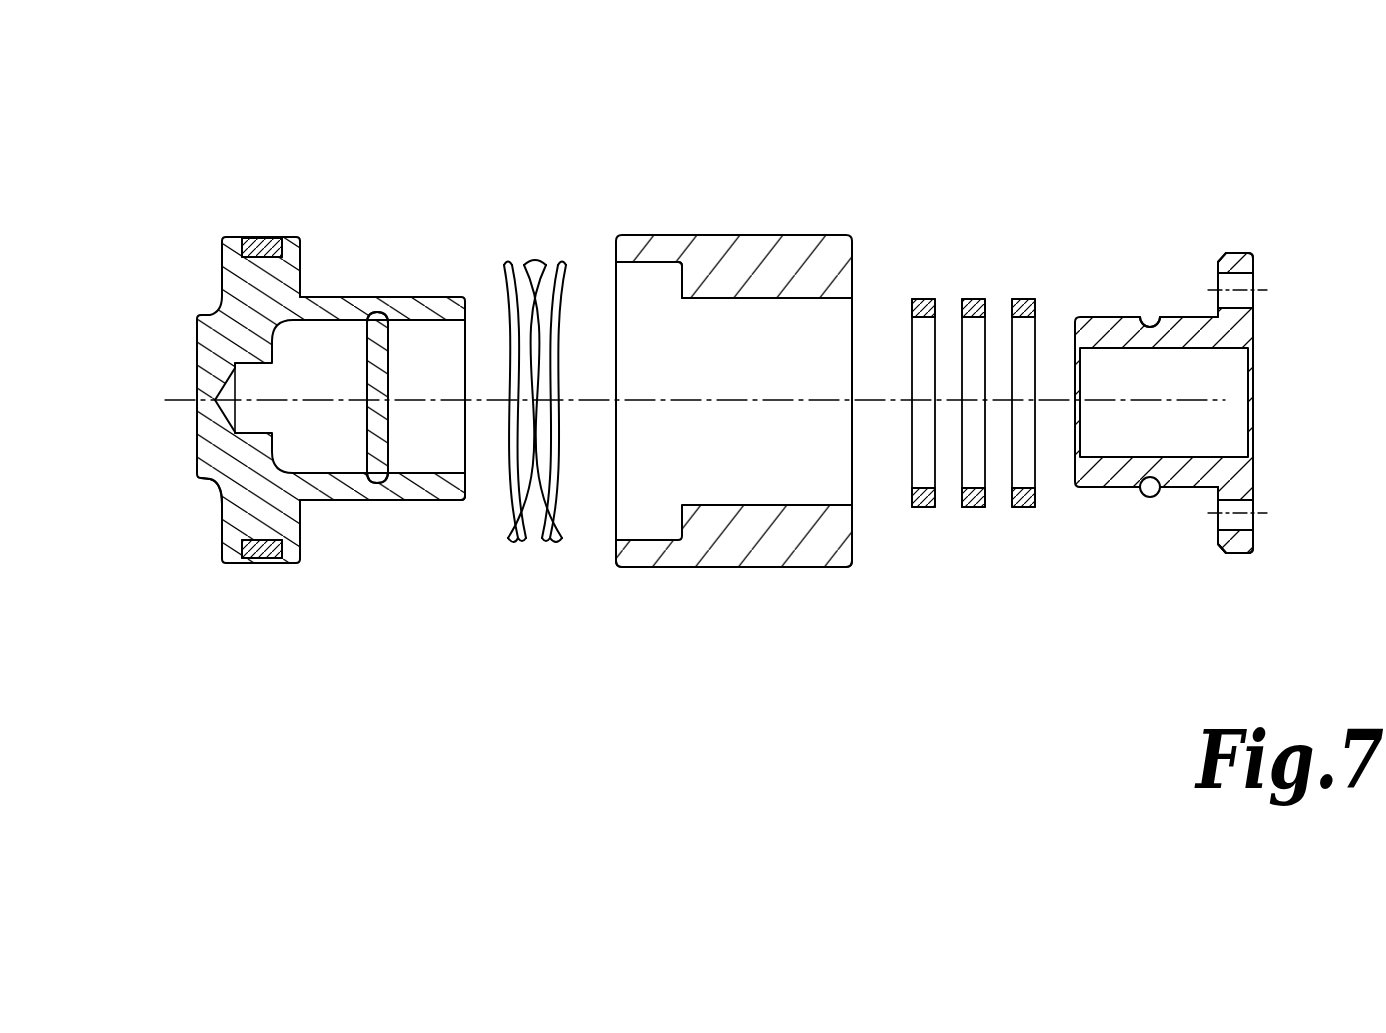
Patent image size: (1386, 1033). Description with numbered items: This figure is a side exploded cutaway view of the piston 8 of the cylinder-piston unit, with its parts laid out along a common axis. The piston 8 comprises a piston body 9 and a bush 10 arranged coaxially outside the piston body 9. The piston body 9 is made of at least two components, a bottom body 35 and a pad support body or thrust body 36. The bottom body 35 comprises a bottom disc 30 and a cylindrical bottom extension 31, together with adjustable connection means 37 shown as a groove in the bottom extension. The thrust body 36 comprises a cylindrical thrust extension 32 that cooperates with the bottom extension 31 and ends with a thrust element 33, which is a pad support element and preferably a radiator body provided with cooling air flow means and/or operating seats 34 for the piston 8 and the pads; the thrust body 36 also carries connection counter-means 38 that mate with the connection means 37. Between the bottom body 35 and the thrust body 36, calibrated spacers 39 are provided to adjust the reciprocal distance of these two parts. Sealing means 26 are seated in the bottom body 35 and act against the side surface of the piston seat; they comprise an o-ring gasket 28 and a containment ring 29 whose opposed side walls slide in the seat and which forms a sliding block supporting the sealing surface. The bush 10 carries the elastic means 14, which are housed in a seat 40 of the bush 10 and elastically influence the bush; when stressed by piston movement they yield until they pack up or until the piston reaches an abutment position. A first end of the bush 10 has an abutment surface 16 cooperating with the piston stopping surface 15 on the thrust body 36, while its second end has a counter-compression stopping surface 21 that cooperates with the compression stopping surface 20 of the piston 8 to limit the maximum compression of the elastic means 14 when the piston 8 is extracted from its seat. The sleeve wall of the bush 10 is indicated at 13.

The piston 8 is at (1158, 188).
The piston body 9 is at (233, 492).
The bush 10 is at (792, 253).
The sleeve body 13 is at (749, 566).
The elastic means 14 is at (550, 282).
The piston stopping surface 15 is at (1213, 523).
The abutment surface 16 is at (854, 542).
The compression stopping surface 20 is at (300, 530).
The counter-compression stopping surface 21 is at (616, 551).
The sealing means 26 is at (253, 571).
The o-ring gasket 28 is at (305, 260).
The containment ring 29 is at (250, 237).
The bottom disc 30 is at (250, 305).
The cylindrical bottom extension 31 is at (435, 492).
The cylindrical thrust extension 32 is at (1108, 487).
The thrust element 33 is at (1233, 262).
The operating seats 34 is at (1238, 292).
The bottom body 35 is at (385, 530).
The thrust body 36 is at (1164, 505).
The adjustable connection means 37 is at (412, 335).
The connection counter-means 38 is at (1100, 317).
The spacers 39 is at (973, 298).
The seat 40 is at (672, 288).